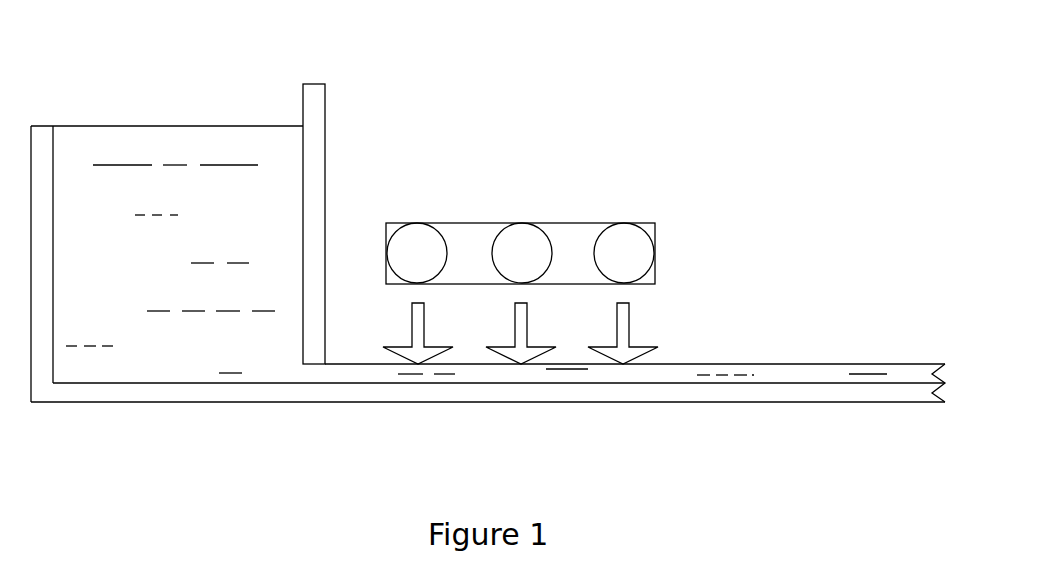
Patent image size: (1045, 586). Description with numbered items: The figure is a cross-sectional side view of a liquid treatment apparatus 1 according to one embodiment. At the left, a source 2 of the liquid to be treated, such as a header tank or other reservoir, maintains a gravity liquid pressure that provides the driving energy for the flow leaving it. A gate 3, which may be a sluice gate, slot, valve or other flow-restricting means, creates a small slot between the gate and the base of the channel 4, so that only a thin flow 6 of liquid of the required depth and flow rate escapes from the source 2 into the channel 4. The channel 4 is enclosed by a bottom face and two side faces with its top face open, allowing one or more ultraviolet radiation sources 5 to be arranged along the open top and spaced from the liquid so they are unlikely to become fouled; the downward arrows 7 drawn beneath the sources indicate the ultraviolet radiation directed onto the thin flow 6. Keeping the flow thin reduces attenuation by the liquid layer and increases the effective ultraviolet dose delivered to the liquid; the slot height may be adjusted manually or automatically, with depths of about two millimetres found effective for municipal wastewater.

The liquid treatment apparatus 1 is at (678, 123).
The source 2 is at (158, 143).
The gate 3 is at (326, 143).
The channel 4 is at (580, 392).
The ultraviolet radiation sources 5 is at (655, 223).
The thin flow 6 is at (337, 373).
The pressing direction arrows 7 is at (632, 326).